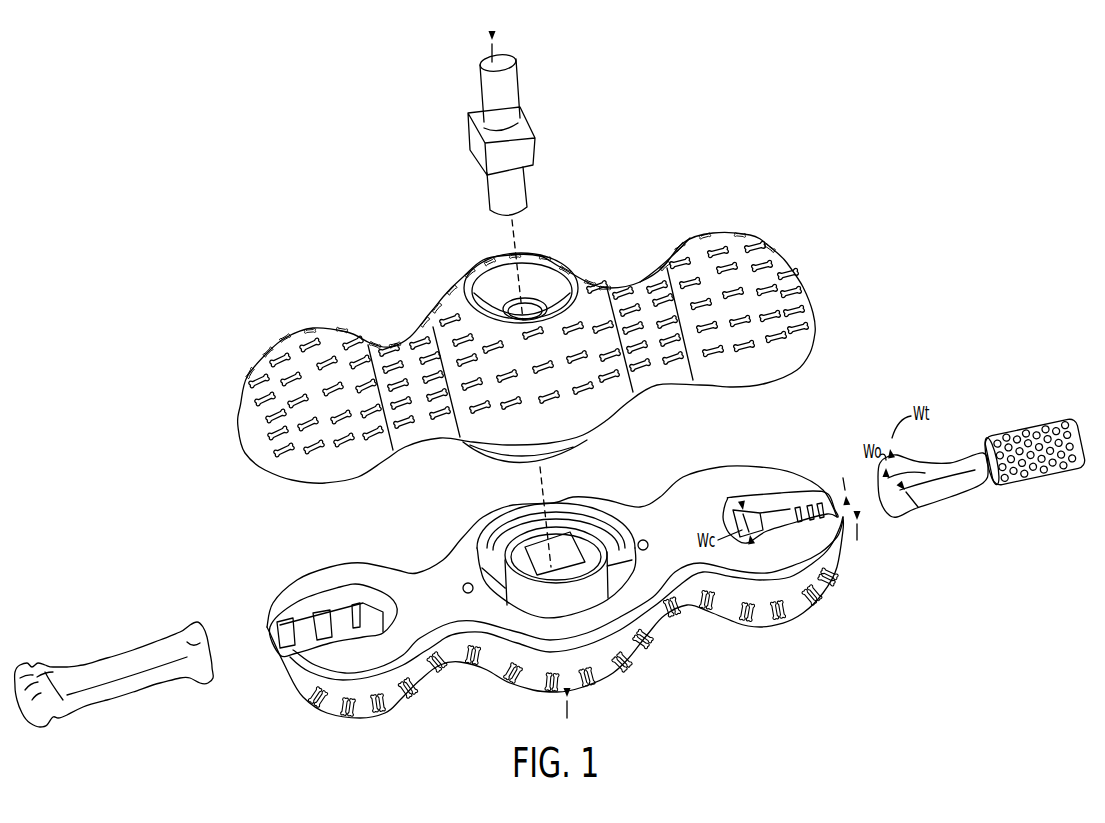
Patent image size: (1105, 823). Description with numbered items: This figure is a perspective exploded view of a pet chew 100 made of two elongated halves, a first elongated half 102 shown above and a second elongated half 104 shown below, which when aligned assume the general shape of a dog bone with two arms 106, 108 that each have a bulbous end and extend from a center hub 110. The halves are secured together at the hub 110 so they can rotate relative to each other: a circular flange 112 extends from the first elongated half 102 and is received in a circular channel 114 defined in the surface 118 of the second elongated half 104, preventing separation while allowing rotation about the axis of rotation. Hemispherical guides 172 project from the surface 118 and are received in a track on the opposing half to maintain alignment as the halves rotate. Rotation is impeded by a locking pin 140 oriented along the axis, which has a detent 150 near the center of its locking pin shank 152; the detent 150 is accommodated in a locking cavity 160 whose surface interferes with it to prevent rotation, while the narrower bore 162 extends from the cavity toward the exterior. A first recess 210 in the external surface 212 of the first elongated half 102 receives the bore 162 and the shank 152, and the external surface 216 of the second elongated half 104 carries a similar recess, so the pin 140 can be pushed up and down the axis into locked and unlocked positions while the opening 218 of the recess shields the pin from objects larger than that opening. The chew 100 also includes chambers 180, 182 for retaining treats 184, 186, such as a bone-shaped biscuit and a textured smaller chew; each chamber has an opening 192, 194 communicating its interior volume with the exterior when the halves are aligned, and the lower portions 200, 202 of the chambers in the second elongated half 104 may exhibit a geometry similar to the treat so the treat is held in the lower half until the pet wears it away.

The pet chew 100 is at (197, 112).
The first elongated half 102 is at (241, 354).
The second elongated half 104 is at (309, 726).
The arm 106 is at (282, 337).
The arm 108 is at (755, 237).
The center hub 110 is at (426, 287).
The flange 112 is at (582, 445).
The channel 114 is at (610, 550).
The surface 118 is at (680, 490).
The locking pin 140 is at (458, 70).
The detent 150 is at (527, 150).
The locking pin shank 152 is at (511, 85).
The locking cavity 160 is at (540, 548).
The bore 162 is at (543, 312).
The guide 172 is at (647, 540).
The chamber 180 is at (775, 512).
The chamber 182 is at (305, 620).
The treat 184 is at (88, 702).
The treat 186 is at (955, 493).
The opening 192 is at (832, 520).
The opening 194 is at (272, 627).
The lower portion of the chamber 200 is at (757, 540).
The lower portion of the chamber 202 is at (320, 615).
The first recess 210 is at (541, 275).
The external surface 212 is at (690, 237).
The external surface 216 is at (598, 685).
The opening 218 is at (506, 269).